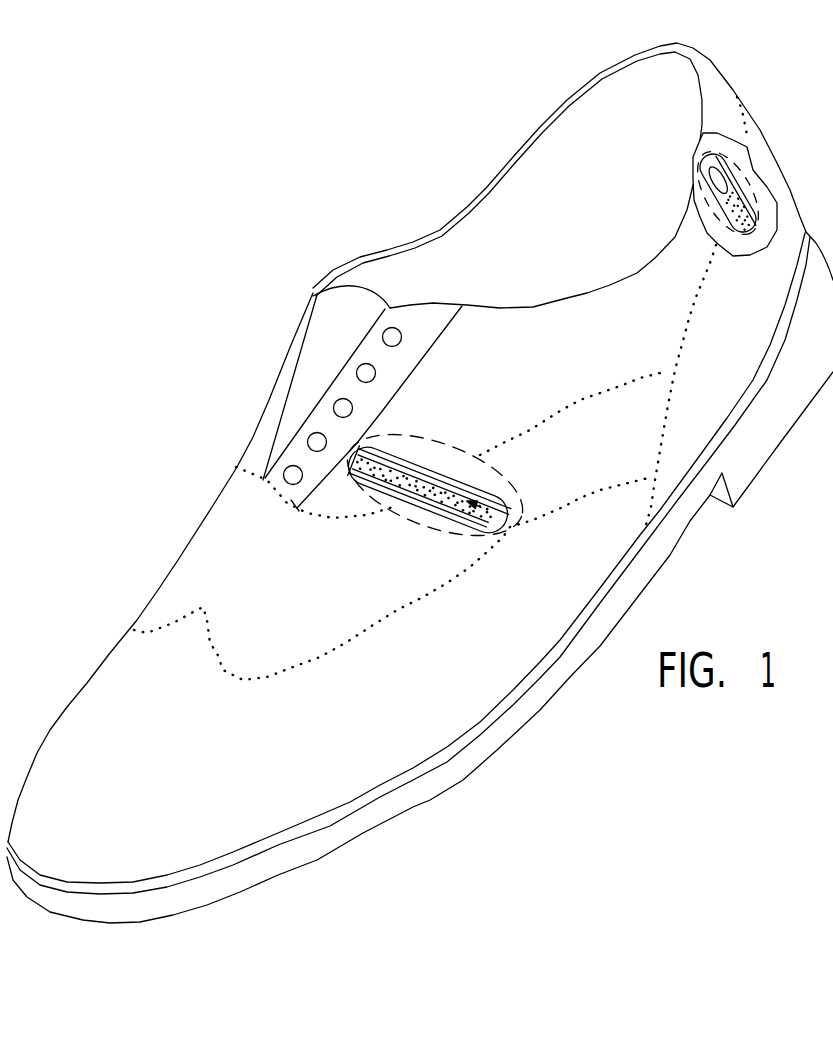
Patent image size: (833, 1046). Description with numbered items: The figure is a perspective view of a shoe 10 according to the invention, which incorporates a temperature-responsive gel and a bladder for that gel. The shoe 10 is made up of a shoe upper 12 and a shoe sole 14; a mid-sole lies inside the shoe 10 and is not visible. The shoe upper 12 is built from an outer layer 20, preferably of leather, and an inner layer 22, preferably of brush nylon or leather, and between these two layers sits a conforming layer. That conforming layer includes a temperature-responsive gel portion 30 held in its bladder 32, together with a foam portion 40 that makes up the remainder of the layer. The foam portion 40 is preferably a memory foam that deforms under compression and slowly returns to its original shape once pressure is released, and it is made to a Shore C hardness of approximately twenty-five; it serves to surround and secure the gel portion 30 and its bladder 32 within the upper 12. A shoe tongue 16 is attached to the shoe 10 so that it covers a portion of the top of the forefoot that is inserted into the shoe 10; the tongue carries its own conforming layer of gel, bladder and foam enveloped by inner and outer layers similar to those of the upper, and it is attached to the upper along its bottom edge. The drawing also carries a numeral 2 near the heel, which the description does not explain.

The shoe 10 is at (130, 553).
The shoe upper 12 is at (104, 649).
The shoe sole 14 is at (363, 823).
The shoe tongue 16 is at (317, 330).
The outer layer 20 is at (444, 456).
The inner layer 22 is at (492, 216).
The temperature-responsive gel portion 30 is at (503, 527).
The bladder 32 is at (490, 533).
The foam portion 40 is at (347, 452).
The heel 2 is at (790, 227).